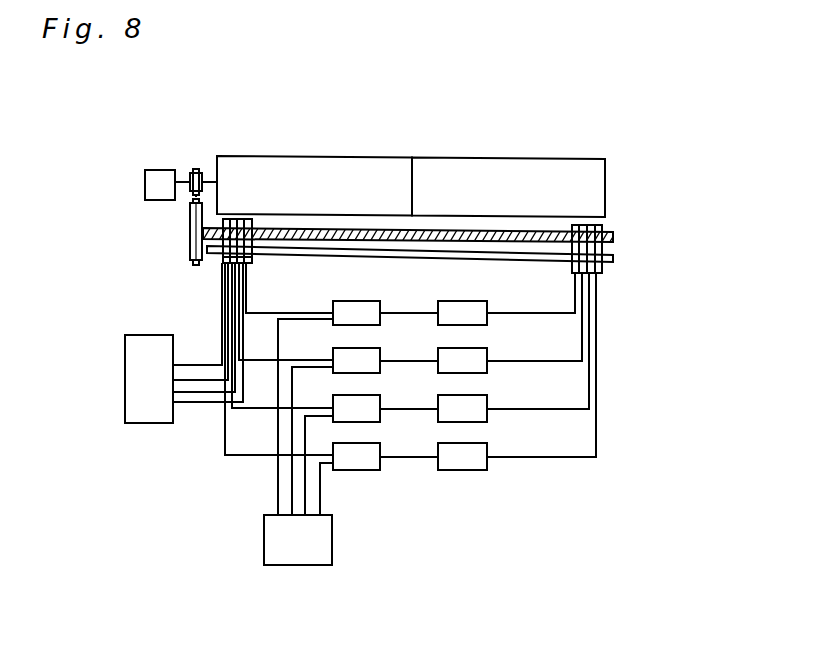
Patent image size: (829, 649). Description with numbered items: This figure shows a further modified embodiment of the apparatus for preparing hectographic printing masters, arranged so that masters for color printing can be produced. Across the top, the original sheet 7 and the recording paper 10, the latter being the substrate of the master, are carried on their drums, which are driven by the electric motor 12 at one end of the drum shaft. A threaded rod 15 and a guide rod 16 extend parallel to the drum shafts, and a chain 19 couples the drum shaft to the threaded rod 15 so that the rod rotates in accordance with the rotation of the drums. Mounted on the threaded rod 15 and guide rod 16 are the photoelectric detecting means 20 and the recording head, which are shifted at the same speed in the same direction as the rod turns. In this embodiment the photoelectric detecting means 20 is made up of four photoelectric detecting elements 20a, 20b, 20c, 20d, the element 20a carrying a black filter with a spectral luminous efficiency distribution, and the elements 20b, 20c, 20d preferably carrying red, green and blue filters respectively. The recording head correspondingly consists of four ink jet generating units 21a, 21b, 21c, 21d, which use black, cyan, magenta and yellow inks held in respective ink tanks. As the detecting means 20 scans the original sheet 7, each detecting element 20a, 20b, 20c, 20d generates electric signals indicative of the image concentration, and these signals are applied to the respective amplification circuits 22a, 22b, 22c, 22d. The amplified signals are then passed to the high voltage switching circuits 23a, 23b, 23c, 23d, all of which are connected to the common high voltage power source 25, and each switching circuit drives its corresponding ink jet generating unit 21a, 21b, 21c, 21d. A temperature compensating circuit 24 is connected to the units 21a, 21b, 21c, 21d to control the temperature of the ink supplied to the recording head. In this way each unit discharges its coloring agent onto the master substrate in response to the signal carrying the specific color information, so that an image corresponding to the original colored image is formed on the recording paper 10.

The original sheet 7 is at (518, 158).
The recording paper 10 is at (328, 157).
The electric motor 12 is at (162, 177).
The threaded rod 15 is at (613, 237).
The guide rod 16 is at (613, 258).
The chain 19 is at (190, 197).
The photoelectric detecting means 20 is at (602, 250).
The photoelectric detecting element 20a is at (602, 268).
The photoelectric detecting element 20b is at (596, 273).
The photoelectric detecting element 20c is at (589, 273).
The photoelectric detecting element 20d is at (581, 273).
The ink jet generating unit 21a is at (223, 262).
The ink jet generating unit 21b is at (230, 265).
The ink jet generating unit 21c is at (246, 264).
The ink jet generating unit 21d is at (252, 263).
The amplification circuit 22a is at (475, 456).
The amplification circuit 22b is at (475, 408).
The amplification circuit 22c is at (475, 360).
The amplification circuit 22d is at (475, 312).
The high voltage switching circuit 23a is at (353, 458).
The high voltage switching circuit 23b is at (353, 410).
The high voltage switching circuit 23c is at (353, 363).
The high voltage switching circuit 23d is at (353, 315).
The temperature compensating circuit 24 is at (135, 373).
The high voltage power source 25 is at (275, 537).